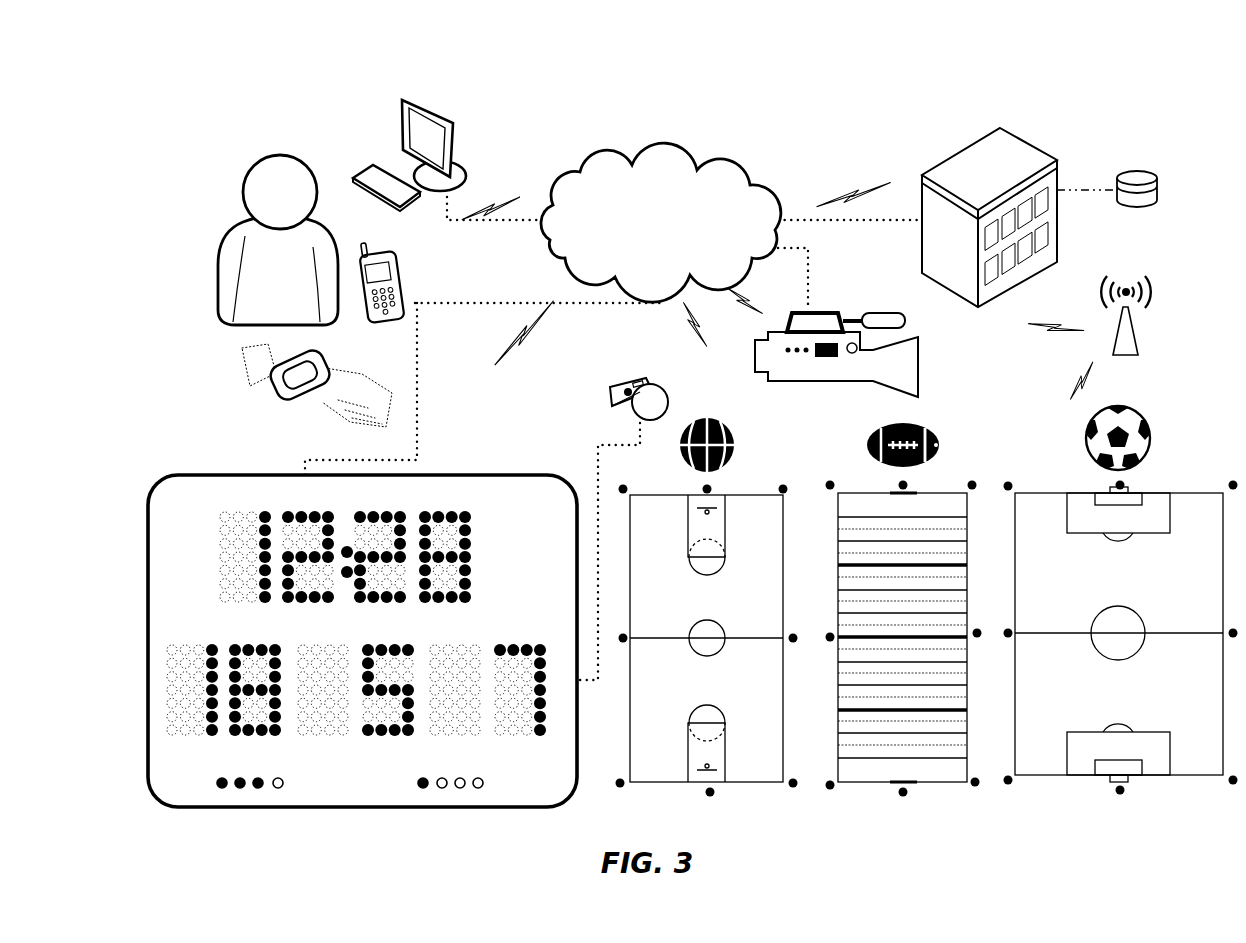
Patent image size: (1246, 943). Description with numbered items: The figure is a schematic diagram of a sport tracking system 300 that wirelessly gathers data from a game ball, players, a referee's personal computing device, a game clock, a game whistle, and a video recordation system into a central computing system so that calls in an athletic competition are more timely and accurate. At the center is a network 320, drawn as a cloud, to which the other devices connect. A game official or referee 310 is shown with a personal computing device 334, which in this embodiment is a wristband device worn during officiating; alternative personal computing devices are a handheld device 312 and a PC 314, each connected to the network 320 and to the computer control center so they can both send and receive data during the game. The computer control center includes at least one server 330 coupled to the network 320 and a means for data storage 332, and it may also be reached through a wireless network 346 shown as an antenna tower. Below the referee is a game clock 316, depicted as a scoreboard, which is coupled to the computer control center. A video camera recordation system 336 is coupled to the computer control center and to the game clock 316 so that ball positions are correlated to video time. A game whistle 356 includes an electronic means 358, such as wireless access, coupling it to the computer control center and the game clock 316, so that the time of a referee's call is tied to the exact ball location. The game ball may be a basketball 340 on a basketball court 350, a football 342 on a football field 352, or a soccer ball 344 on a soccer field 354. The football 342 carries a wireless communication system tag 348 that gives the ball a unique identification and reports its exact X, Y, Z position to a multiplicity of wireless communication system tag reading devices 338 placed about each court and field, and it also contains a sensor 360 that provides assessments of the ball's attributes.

The system 300 is at (270, 92).
The game official or referee 310 is at (238, 222).
The handheld device 312 is at (401, 262).
The PC 314 is at (468, 167).
The game clock 316 is at (467, 475).
The network 320 is at (755, 182).
The server 330 is at (922, 175).
The means for data storage 332 is at (1155, 175).
The personal computing device 334 is at (330, 367).
The video camera recordation system 336 is at (818, 312).
The wireless communication system tag reading devices 338 is at (786, 486).
The basketball 340 is at (726, 440).
The football 342 is at (931, 433).
The soccer ball 344 is at (1143, 426).
The network 346 is at (1138, 329).
The wireless communication system tag 348 is at (896, 425).
The basketball court 350 is at (742, 494).
The football field 352 is at (942, 493).
The soccer field 354 is at (1185, 493).
The game whistle 356 is at (668, 392).
The electronic means 358 is at (627, 389).
The sensor 360 is at (939, 444).